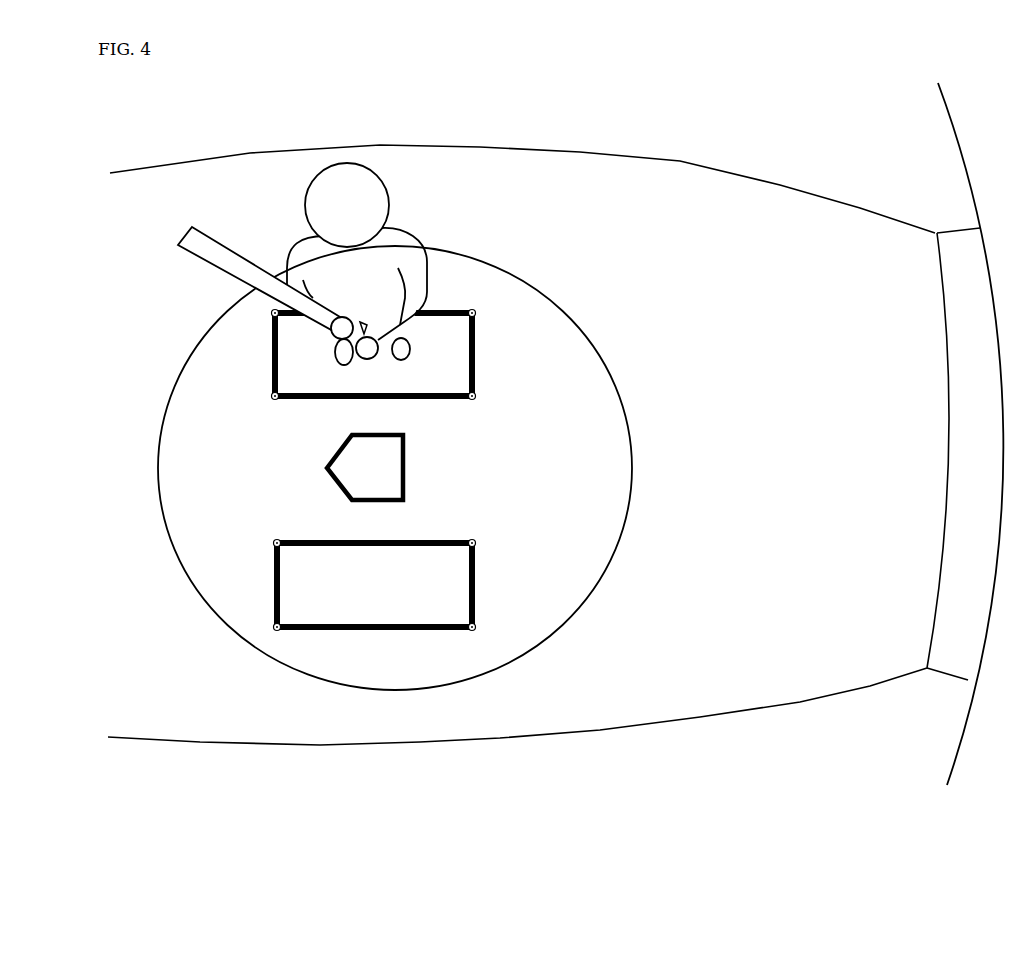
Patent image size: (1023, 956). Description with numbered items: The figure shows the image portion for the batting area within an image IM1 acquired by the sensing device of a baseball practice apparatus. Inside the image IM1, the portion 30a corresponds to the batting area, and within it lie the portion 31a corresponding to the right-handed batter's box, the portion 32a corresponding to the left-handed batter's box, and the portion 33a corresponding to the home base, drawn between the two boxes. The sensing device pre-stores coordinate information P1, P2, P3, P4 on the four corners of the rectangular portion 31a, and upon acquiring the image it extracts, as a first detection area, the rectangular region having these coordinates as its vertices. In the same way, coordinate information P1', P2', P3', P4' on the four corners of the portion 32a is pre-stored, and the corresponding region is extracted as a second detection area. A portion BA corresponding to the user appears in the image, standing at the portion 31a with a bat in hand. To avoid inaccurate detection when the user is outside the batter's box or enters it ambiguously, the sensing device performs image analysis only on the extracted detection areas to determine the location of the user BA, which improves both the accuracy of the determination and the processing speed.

The image IM1 is at (796, 132).
The portion corresponding to the batting area 30a is at (636, 472).
The portion corresponding to the right-handed batter's box 31a is at (476, 350).
The portion corresponding to the left-handed batter's box 32a is at (476, 585).
The portion corresponding to the home base 33a is at (405, 457).
The portion corresponding to the user BA is at (430, 240).
The coordinate information P1 is at (263, 317).
The coordinate information P2 is at (484, 317).
The coordinate information P3 is at (262, 397).
The coordinate information P4 is at (484, 397).
The coordinate information P1' is at (262, 546).
The coordinate information P2' is at (487, 546).
The coordinate information P3' is at (262, 627).
The coordinate information P4' is at (487, 627).